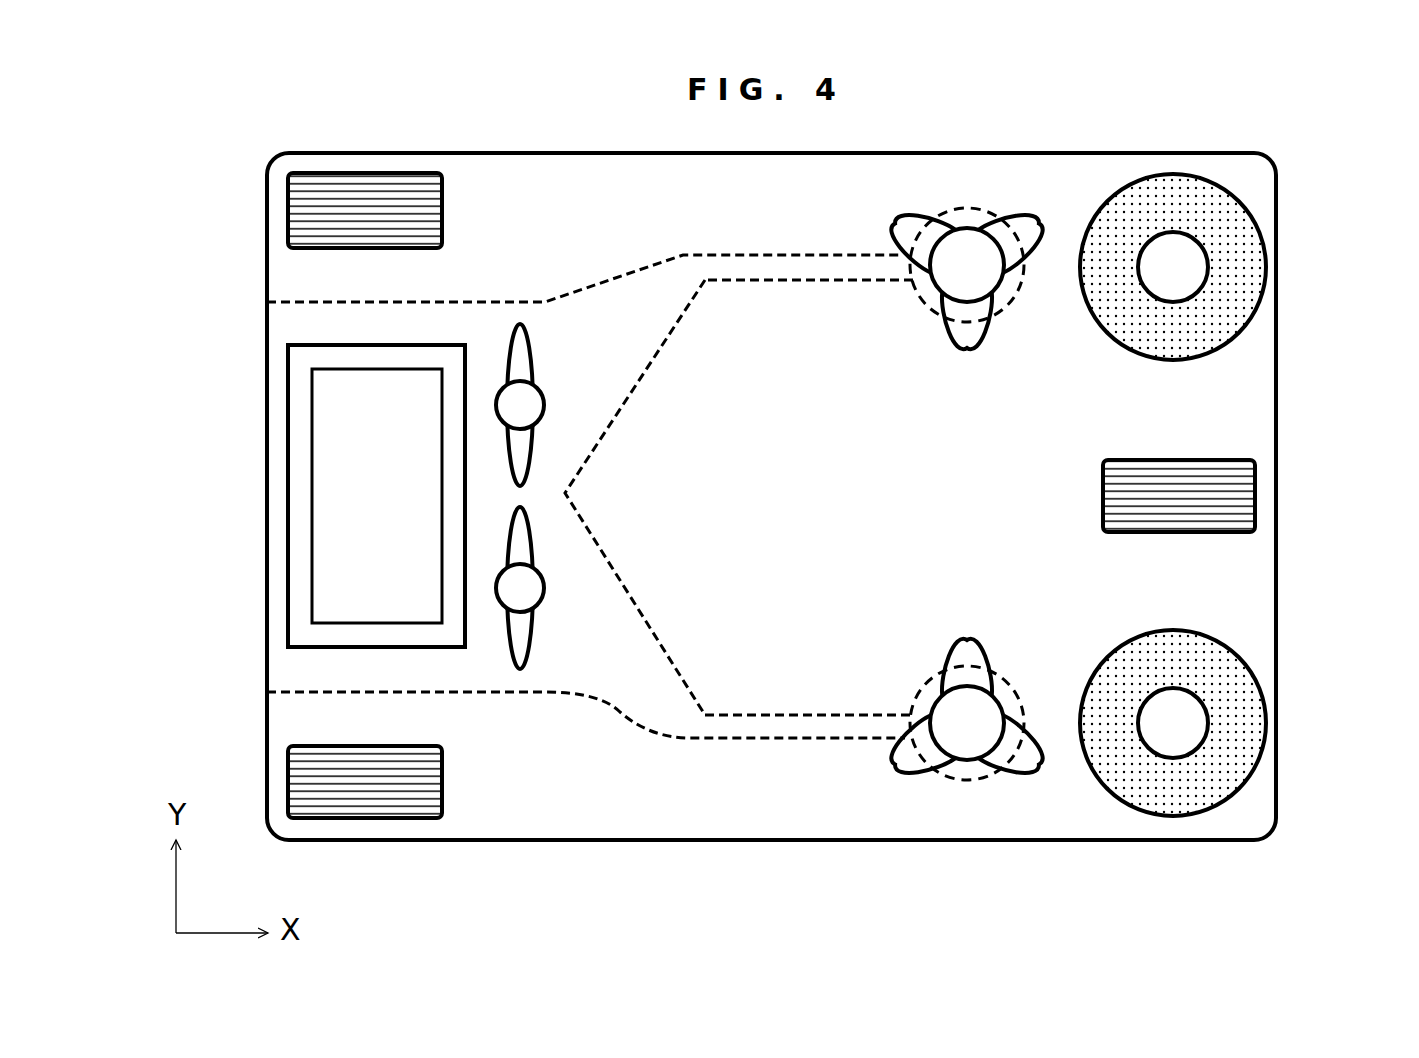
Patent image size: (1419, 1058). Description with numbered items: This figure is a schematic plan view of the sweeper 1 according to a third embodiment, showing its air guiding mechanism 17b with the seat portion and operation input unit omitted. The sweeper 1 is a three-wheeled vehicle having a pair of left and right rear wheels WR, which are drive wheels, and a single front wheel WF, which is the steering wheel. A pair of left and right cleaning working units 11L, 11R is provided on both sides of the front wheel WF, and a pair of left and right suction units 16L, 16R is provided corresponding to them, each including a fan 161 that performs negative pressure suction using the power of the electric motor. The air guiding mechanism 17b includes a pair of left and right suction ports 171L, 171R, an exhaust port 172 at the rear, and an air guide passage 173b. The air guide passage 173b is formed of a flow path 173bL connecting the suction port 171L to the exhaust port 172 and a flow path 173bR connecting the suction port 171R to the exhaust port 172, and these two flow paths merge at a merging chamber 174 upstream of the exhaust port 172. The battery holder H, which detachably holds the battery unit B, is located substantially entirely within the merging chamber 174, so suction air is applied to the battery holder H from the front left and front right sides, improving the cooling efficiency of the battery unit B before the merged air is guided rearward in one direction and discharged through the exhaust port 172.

The sweeper 1 is at (1057, 153).
The left cleaning working unit 11L is at (1276, 258).
The right cleaning working unit 11R is at (1276, 733).
The left suction unit 16L is at (965, 183).
The right suction unit 16R is at (1052, 782).
The fan 161 is at (521, 325).
The left suction port 171L is at (940, 322).
The right suction port 171R is at (958, 790).
The exhaust port 172 is at (265, 605).
The air guide passage 173b is at (648, 723).
The left flow path 173bL is at (612, 365).
The right flow path 173bR is at (612, 617).
The merging chamber 174 is at (488, 466).
The air guiding mechanism 17b is at (748, 762).
The rear wheel WR is at (372, 173).
The front wheel WF is at (1255, 498).
The battery holder H is at (288, 400).
The battery unit B is at (312, 484).